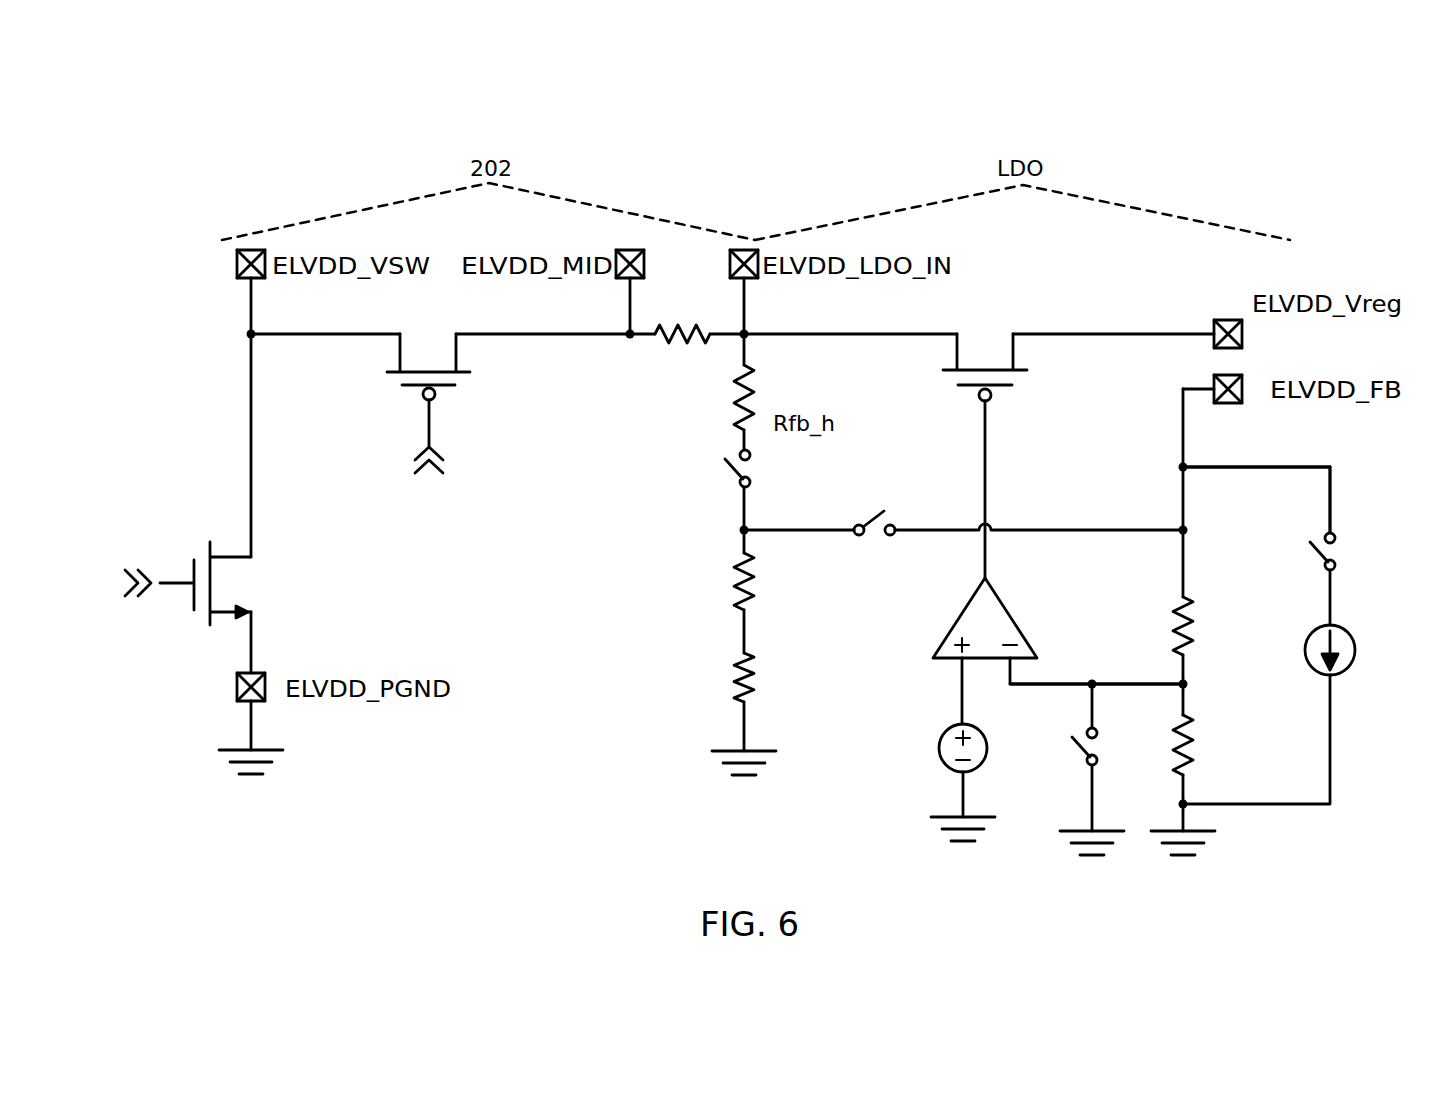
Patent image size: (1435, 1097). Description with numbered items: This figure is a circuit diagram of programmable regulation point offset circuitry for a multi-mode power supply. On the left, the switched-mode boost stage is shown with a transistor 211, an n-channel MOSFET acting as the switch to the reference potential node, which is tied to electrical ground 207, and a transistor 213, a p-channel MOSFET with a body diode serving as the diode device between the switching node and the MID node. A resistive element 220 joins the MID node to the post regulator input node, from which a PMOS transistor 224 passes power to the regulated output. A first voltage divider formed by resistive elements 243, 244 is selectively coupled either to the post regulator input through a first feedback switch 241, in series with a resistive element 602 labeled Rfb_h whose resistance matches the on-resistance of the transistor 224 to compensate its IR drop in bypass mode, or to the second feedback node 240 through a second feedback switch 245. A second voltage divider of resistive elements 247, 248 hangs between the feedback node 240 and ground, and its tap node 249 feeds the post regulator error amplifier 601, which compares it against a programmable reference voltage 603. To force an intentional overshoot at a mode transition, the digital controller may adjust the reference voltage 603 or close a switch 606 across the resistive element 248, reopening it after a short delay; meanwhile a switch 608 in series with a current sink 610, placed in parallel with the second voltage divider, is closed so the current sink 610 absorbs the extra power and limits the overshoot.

The electrical ground 207 is at (232, 750).
The transistor 211 is at (193, 568).
The transistor with a body diode 213 is at (438, 390).
The resistor 220 is at (690, 345).
The transistor 224 is at (995, 388).
The second feedback node 240 is at (1298, 465).
The first feedback switch 241 is at (730, 465).
The resistive element 243 is at (759, 575).
The resistive element 244 is at (759, 672).
The second feedback switch 245 is at (872, 512).
The resistive element 247 is at (1196, 615).
The resistive element 248 is at (1196, 738).
The tap node 249 is at (1124, 682).
The post regulator error amplifier 601 is at (955, 625).
The resistive element 602 is at (760, 386).
The programmable reference voltage 603 is at (945, 730).
The switch 606 is at (1078, 750).
The switch 608 is at (1316, 556).
The current sink 610 is at (1354, 633).